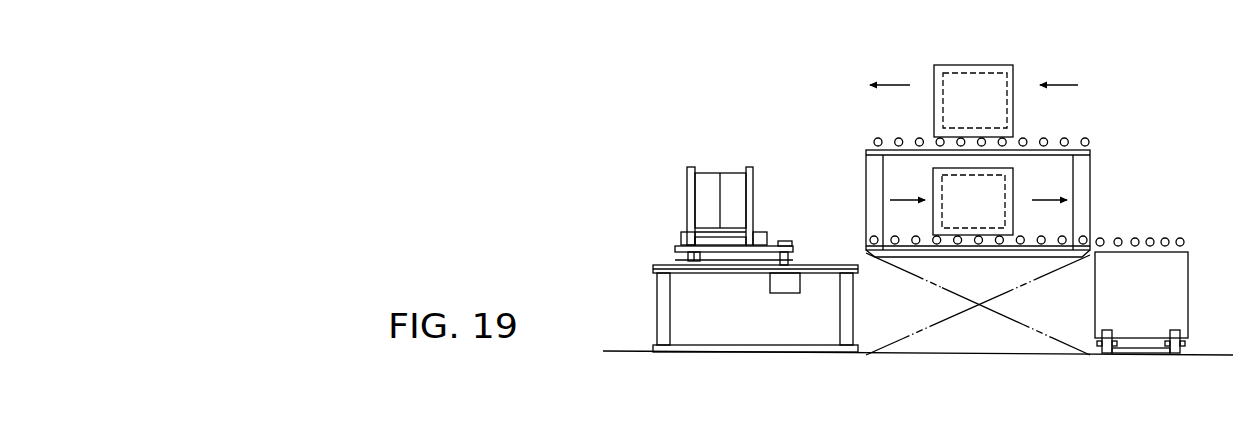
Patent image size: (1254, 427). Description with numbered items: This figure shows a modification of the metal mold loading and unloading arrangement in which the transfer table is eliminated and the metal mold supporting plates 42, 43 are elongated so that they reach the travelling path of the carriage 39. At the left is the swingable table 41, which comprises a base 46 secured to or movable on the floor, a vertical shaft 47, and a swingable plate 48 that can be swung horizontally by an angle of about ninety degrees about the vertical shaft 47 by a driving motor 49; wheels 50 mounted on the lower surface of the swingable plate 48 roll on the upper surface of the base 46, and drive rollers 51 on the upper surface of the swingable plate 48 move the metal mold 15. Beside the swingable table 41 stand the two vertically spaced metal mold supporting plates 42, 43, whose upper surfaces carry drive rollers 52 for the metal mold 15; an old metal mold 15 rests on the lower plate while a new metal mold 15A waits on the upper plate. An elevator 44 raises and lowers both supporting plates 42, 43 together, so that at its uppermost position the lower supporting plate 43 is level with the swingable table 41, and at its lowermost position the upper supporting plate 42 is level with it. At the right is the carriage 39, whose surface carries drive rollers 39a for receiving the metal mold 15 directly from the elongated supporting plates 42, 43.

The metal mold 15 is at (708, 181).
The new metal mold 15A is at (975, 65).
The carriage 39 is at (1182, 293).
The drive rollers 39a is at (1180, 237).
The swingable table 41 is at (790, 163).
The metal mold supporting plate 42 is at (1060, 154).
The metal mold supporting plate 43 is at (1010, 252).
The elevator 44 is at (951, 314).
The base 46 is at (657, 301).
The vertical shaft 47 is at (786, 243).
The swingable plate 48 is at (738, 252).
The driving motor 49 is at (790, 287).
The wheels 50 is at (695, 258).
The drive rollers 51 is at (757, 232).
The drive rollers 52 is at (1046, 132).